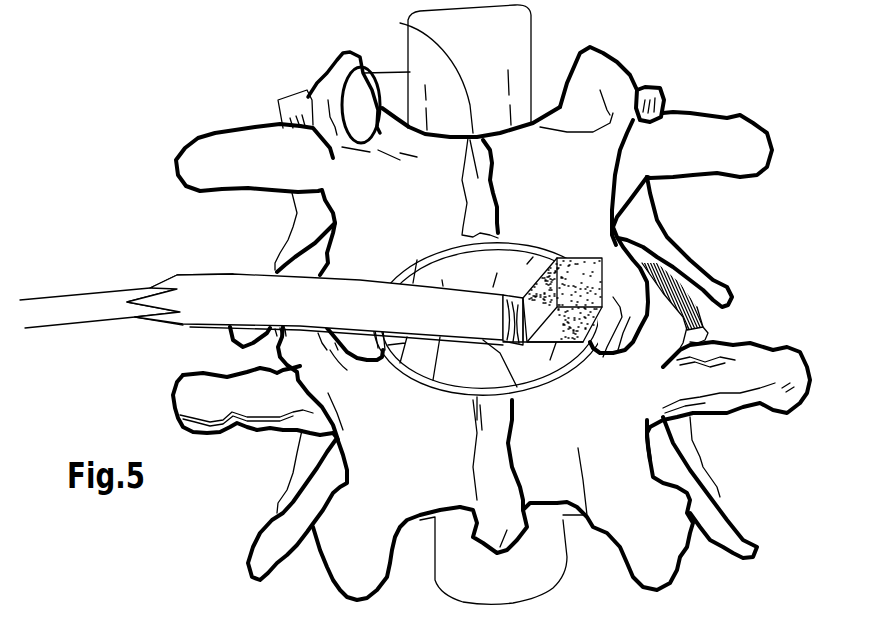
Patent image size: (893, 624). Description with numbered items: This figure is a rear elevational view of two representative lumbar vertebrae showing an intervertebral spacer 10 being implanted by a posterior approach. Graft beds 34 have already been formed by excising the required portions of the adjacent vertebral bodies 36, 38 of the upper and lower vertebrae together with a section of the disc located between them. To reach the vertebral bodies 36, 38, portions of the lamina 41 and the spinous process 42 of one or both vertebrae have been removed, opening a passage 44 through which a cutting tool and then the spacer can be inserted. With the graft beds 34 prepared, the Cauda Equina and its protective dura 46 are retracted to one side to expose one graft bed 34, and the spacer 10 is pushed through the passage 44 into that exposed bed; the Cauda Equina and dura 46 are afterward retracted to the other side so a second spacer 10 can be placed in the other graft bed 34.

The intervertebral spacer 10 is at (603, 258).
The graft bed 34 is at (537, 355).
The vertebral body 36 is at (213, 99).
The vertebral body 38 is at (213, 477).
The lamina 41 is at (583, 515).
The spinous process 42 is at (405, 24).
The passage 44 is at (632, 311).
The dura 46 is at (500, 38).